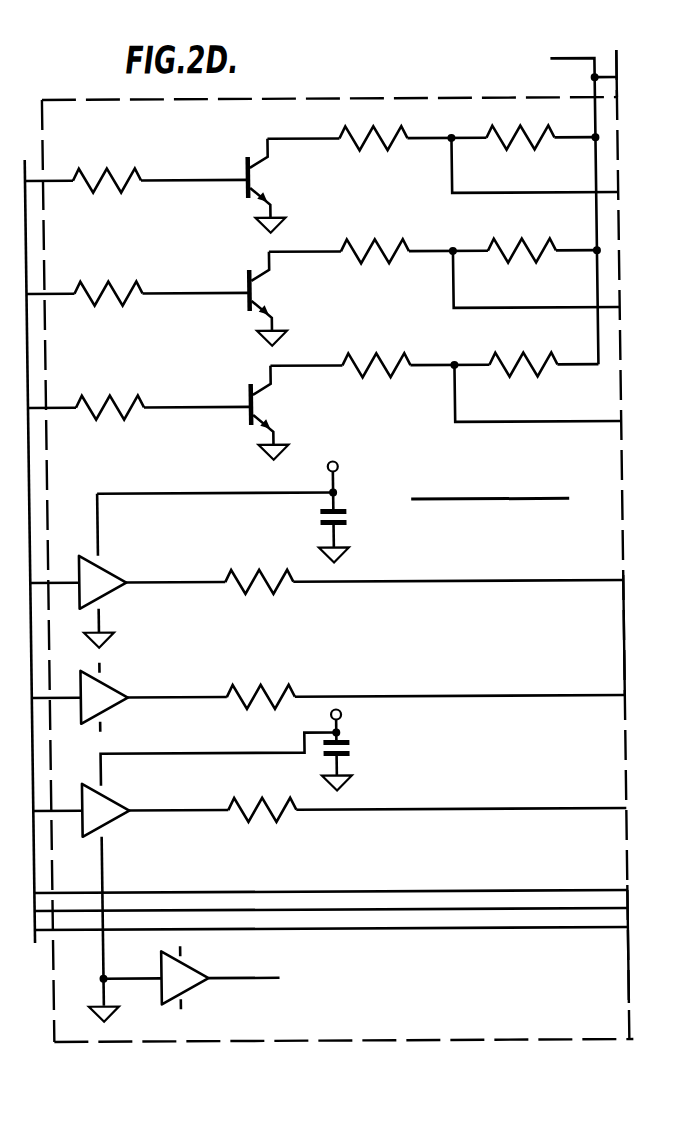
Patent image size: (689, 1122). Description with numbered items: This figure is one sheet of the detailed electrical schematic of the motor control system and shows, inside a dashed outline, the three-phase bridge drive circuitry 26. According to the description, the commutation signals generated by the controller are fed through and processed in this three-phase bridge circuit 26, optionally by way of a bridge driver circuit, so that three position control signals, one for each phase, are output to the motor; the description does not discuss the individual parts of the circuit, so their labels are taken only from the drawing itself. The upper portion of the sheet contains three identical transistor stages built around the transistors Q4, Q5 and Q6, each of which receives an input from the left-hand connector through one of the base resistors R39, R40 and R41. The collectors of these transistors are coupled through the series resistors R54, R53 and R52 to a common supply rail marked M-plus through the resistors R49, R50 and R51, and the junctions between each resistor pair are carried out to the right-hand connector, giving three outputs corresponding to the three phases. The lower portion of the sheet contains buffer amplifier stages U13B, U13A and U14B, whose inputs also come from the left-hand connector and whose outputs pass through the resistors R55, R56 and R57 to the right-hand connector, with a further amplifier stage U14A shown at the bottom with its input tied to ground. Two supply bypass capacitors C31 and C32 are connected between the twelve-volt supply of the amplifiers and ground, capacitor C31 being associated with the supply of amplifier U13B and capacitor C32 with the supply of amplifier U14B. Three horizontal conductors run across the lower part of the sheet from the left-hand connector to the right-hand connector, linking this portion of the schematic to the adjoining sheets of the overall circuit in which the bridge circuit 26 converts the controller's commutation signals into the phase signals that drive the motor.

The three-phase bridge circuit 26 is at (291, 101).
The transistor MPSA05 Q4 is at (238, 182).
The transistor MPSA05 Q5 is at (240, 295).
The transistor MPSA05 Q6 is at (241, 409).
The base resistor 15K R39 is at (111, 180).
The base resistor 15K R40 is at (112, 293).
The base resistor 15K R41 is at (113, 407).
The collector resistor 1K R54 is at (373, 139).
The collector resistor 1K R53 is at (374, 252).
The collector resistor 1K R52 is at (376, 365).
The pull-up resistor 1.2K R49 is at (519, 138).
The pull-up resistor 1.2K R50 is at (520, 251).
The pull-up resistor 1.2K R51 is at (522, 364).
The output resistor 470 R55 is at (260, 583).
The output resistor 470 R56 is at (262, 698).
The output resistor 470 R57 is at (264, 811).
The bypass capacitor C31 is at (380, 498).
The bypass capacitor C32 is at (385, 746).
The buffer amplifier U13B is at (129, 570).
The buffer amplifier U13A is at (135, 690).
The buffer amplifier U14B is at (136, 883).
The buffer amplifier U14A is at (189, 983).